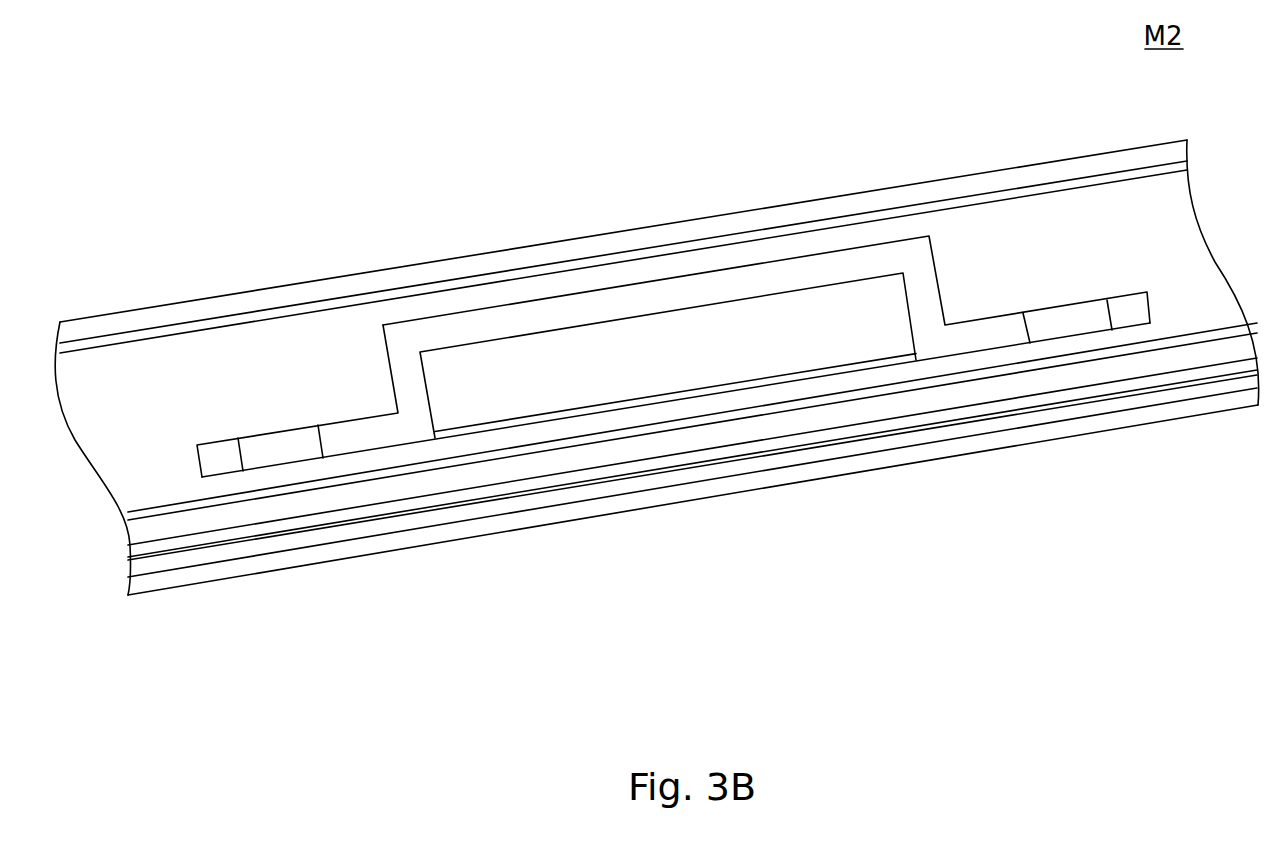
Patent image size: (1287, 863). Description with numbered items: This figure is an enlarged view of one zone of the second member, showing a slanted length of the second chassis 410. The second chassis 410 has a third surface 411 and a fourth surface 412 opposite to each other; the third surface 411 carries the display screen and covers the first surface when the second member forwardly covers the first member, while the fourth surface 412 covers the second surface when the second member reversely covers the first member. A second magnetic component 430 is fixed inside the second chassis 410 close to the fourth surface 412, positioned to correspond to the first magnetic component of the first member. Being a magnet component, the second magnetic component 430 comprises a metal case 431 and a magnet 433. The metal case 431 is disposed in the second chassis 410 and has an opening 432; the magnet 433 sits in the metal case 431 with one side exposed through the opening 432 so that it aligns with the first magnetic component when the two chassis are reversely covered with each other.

The second chassis 410 is at (867, 143).
The third surface 411 is at (1074, 156).
The fourth surface 412 is at (980, 453).
The second magnetic component 430 is at (407, 632).
The metal case 431 is at (398, 430).
The opening 432 is at (645, 413).
The magnet 433 is at (780, 348).